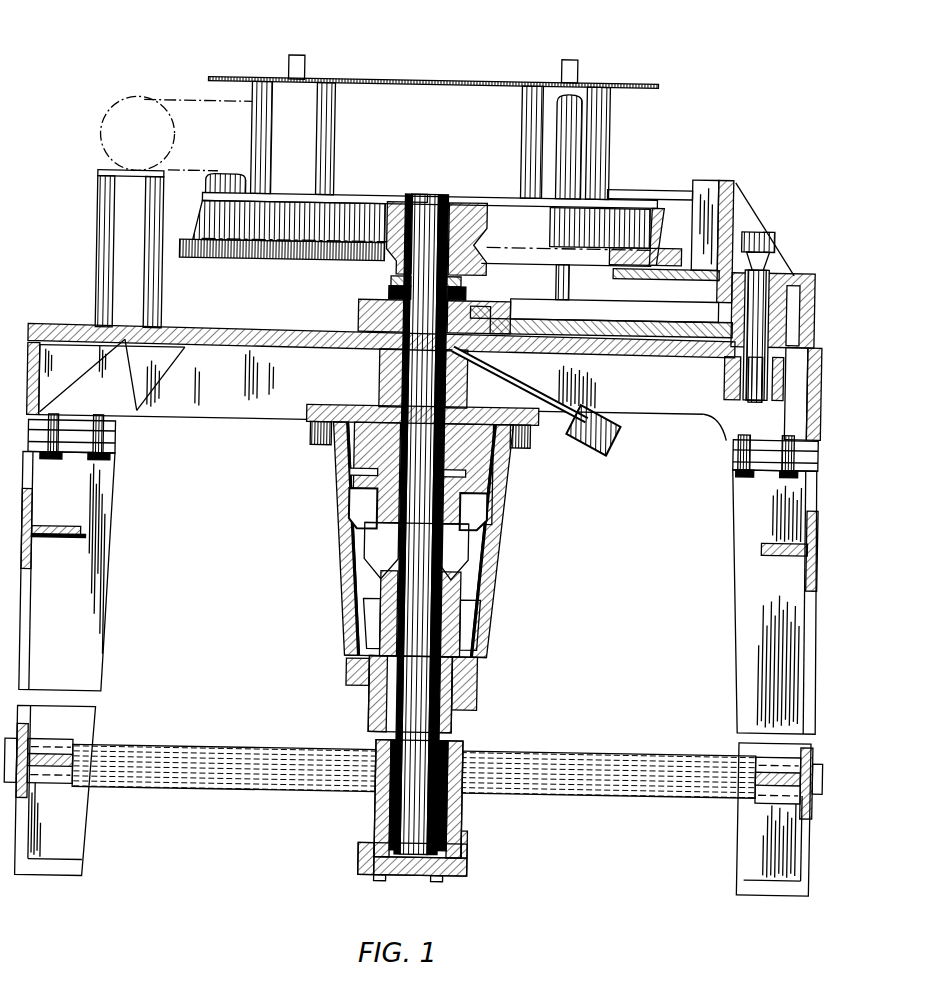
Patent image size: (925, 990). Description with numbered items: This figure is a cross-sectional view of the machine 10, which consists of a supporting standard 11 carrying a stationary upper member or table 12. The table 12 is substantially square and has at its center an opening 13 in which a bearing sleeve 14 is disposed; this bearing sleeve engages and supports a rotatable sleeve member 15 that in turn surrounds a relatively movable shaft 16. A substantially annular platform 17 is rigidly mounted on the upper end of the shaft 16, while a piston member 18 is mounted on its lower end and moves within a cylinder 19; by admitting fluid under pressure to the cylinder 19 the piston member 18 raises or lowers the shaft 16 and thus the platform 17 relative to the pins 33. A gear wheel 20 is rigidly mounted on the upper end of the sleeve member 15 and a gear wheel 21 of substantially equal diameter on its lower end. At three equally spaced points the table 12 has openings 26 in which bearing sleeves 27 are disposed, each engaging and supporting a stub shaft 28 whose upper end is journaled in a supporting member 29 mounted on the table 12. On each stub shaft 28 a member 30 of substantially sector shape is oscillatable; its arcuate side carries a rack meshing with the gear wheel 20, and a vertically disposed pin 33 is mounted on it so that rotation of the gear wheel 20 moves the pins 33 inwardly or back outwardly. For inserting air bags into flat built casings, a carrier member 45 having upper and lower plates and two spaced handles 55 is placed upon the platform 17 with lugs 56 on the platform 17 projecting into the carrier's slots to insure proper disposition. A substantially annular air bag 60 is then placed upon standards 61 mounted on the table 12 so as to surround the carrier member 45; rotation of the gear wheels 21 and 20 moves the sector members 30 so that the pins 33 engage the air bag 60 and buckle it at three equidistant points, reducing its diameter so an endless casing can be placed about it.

The machine 10 is at (306, 405).
The supporting standard 11 is at (85, 581).
The table 12 is at (258, 334).
The opening 13 is at (380, 373).
The bearing sleeve 14 is at (382, 396).
The rotatable sleeve member 15 is at (498, 373).
The shaft 16 is at (447, 394).
The annular platform 17 is at (326, 250).
The piston member 18 is at (470, 818).
The cylinder 19 is at (472, 746).
The gear wheel 20 is at (358, 320).
The gear wheel 21 is at (343, 472).
The openings 26 is at (725, 373).
The bearing sleeves 27 is at (803, 394).
The stub shaft 28 is at (760, 390).
The supporting member 29 is at (786, 262).
The member of substantially sector shape 30 is at (646, 353).
The pin 33 is at (577, 138).
The carrier member 45 is at (618, 82).
The handles 55 is at (312, 50).
The lugs 56 is at (230, 180).
The air bag 60 is at (136, 103).
The standards 61 is at (96, 221).